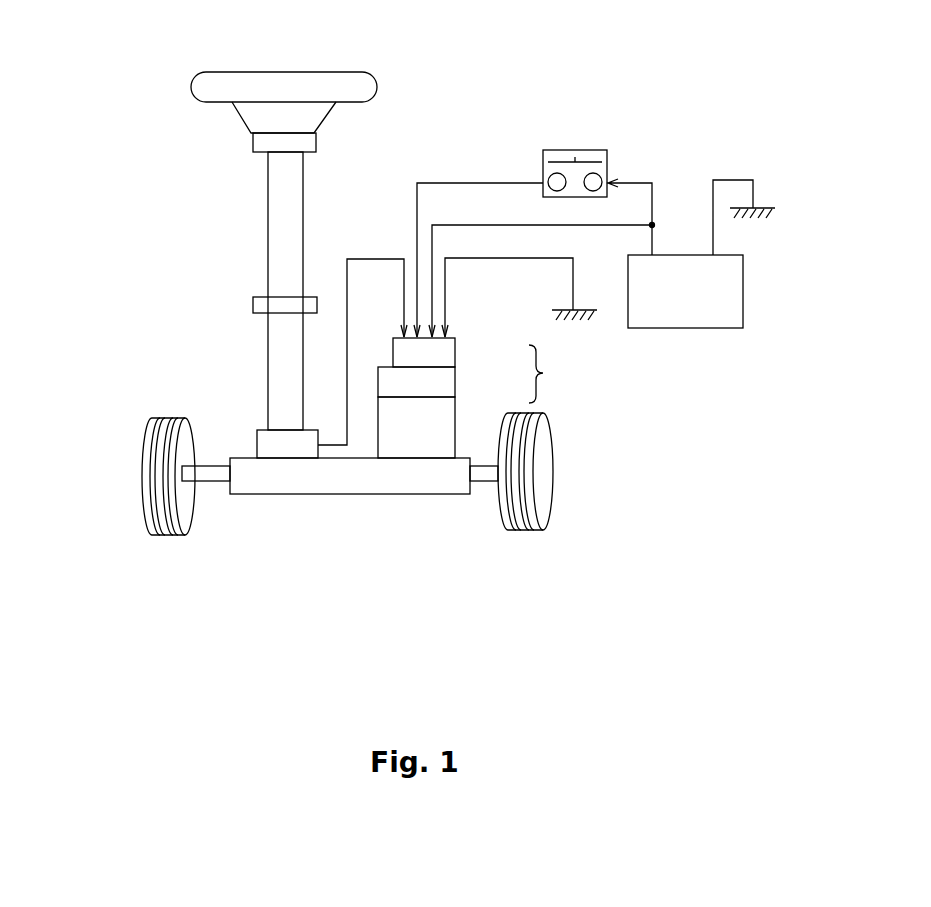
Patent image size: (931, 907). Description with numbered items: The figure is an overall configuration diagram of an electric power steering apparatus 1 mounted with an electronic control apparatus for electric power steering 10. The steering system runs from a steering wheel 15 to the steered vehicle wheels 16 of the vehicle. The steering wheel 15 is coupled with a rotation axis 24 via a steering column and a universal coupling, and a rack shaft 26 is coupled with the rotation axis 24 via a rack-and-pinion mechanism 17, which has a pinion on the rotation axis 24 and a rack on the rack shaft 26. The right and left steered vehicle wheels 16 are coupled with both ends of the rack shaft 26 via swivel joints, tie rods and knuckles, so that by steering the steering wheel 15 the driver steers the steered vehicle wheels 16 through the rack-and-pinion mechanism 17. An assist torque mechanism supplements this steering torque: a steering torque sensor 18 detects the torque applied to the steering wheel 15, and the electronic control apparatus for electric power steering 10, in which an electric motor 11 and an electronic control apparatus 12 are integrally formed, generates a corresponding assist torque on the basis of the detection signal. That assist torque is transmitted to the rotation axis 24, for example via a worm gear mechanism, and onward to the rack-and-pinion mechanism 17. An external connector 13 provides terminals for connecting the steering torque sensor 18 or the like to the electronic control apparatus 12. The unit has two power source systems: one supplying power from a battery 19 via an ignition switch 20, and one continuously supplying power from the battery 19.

The electric power steering apparatus 1 is at (293, 606).
The electronic control apparatus for electric power steering 10 is at (552, 374).
The electric motor 11 is at (456, 425).
The electronic control apparatus 12 is at (456, 381).
The external connector 13 is at (456, 351).
The steering wheel 15 is at (287, 85).
The steered vehicle wheels 16 is at (142, 467).
The rack-and-pinion mechanism 17 is at (344, 489).
The steering torque sensor 18 is at (263, 430).
The battery 19 is at (744, 289).
The ignition switch 20 is at (593, 150).
The rotation axis 24 is at (290, 215).
The rack shaft 26 is at (484, 473).